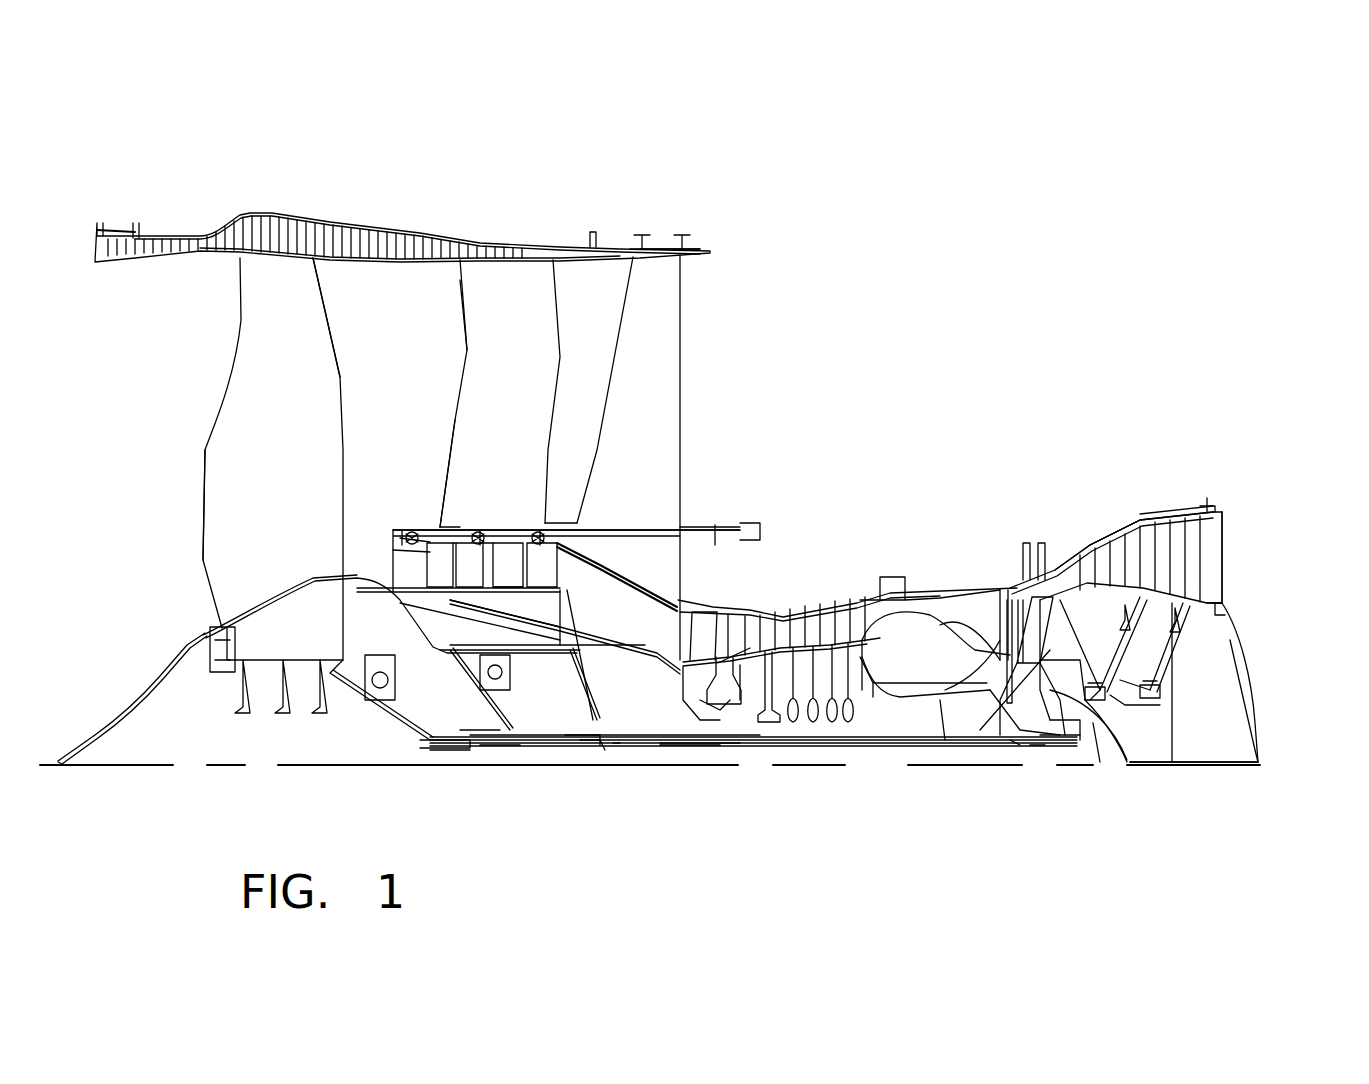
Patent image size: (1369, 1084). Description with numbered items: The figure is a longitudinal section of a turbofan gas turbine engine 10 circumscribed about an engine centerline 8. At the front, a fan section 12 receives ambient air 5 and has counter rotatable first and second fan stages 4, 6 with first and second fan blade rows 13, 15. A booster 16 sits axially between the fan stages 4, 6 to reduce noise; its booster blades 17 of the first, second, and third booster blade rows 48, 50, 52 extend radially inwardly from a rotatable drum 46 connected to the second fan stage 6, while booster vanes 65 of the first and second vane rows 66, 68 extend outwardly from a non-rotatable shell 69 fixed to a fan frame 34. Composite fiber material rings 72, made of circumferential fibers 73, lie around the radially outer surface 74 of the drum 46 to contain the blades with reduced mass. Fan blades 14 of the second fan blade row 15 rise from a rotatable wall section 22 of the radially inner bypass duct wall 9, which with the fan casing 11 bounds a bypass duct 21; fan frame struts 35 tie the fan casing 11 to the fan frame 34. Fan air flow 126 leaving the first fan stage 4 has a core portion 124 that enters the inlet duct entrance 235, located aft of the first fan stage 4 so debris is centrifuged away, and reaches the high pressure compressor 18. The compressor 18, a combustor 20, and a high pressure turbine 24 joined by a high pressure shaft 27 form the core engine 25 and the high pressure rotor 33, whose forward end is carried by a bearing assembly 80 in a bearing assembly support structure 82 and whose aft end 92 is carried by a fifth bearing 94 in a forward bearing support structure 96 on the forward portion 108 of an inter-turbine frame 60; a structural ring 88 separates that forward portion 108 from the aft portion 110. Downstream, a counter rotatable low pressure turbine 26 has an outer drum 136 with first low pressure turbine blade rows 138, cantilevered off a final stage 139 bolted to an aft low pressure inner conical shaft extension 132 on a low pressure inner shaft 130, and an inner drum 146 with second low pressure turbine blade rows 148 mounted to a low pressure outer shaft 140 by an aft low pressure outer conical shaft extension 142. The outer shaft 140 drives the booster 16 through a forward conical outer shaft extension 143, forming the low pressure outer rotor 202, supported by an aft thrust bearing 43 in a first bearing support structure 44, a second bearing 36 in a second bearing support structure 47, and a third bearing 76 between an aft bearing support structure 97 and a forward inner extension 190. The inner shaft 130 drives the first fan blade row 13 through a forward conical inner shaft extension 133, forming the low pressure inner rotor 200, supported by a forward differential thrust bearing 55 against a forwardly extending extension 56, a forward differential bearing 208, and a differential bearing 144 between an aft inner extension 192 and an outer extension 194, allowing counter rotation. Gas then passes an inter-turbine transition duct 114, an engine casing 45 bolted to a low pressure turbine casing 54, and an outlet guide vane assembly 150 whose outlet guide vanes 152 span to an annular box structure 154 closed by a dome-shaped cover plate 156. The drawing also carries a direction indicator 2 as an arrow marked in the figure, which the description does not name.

The core flow direction 2 is at (420, 480).
The first fan stage 4 is at (200, 312).
The ambient air 5 is at (75, 564).
The second fan stage 6 is at (430, 318).
The engine centerline 8 is at (318, 768).
The radially inner bypass duct wall 9 is at (470, 530).
The turbofan gas turbine engine 10 is at (785, 120).
The fan casing 11 is at (550, 240).
The fan section 12 is at (158, 156).
The first fan blade row 13 is at (185, 535).
The fan blades 14 is at (318, 360).
The second fan blade row 15 is at (462, 362).
The booster 16 is at (445, 520).
The booster blades 17 is at (393, 560).
The high pressure compressor 18 is at (725, 590).
The combustor 20 is at (925, 580).
The bypass duct 21 is at (349, 317).
The rotatable wall section 22 is at (420, 545).
The high pressure turbine 24 is at (1000, 575).
The core engine 25 is at (830, 575).
The low pressure turbine 26 is at (1152, 440).
The high pressure shaft 27 is at (930, 685).
The high pressure rotor 33 is at (870, 740).
The fan frame 34 is at (685, 570).
The fan frame struts 35 is at (628, 457).
The second bearing 36 is at (603, 750).
The aft thrust bearing 43 is at (497, 672).
The first bearing support structure 44 is at (552, 640).
The engine casing 45 is at (855, 600).
The rotatable drum 46 is at (410, 530).
The second bearing support structure 47 is at (580, 745).
The first booster blade row 48 is at (400, 545).
The second booster blade row 50 is at (485, 565).
The third booster blade row 52 is at (595, 563).
The low pressure turbine casing 54 is at (1195, 512).
The forward differential thrust bearing 55 is at (368, 700).
The forwardly extending extension 56 is at (430, 657).
The inter-turbine frame 60 is at (1020, 650).
The booster vanes 65 is at (465, 528).
The first vane row 66 is at (430, 600).
The second vane row 68 is at (505, 583).
The non-rotatable shell 69 is at (480, 605).
The composite fiber material rings 72 is at (425, 540).
The fibers 73 is at (420, 533).
The radially outer surface 74 is at (575, 525).
The third bearing 76 is at (1180, 730).
The bearing assembly 80 is at (715, 755).
The bearing assembly support structure 82 is at (700, 710).
The structural ring 88 is at (1040, 680).
The aft end 92 is at (1050, 745).
The fifth bearing 94 is at (1060, 745).
The forward bearing support structure 96 is at (1010, 740).
The aft bearing support structure 97 is at (1140, 660).
The forward portion 108 is at (1040, 705).
The aft portion 110 is at (1065, 655).
The inter-turbine transition duct 114 is at (1020, 585).
The core portion 124 is at (372, 575).
The fan air flow 126 is at (50, 500).
The low pressure inner shaft 130 is at (1020, 755).
The aft low pressure inner conical shaft extension 132 is at (1180, 648).
The forward conical inner shaft extension 133 is at (415, 715).
The outer drum 136 is at (1140, 520).
The first low pressure turbine blade rows 138 is at (1160, 552).
The final stage 139 is at (1225, 582).
The low pressure outer shaft 140 is at (1035, 745).
The aft low pressure outer conical shaft extension 142 is at (1095, 745).
The forward conical outer shaft extension 143 is at (480, 700).
The differential bearing 144 is at (1130, 690).
The inner drum 146 is at (1160, 605).
The second low pressure turbine blade rows 148 is at (1140, 530).
The outlet guide vane assembly 150 is at (1250, 602).
The outlet guide vanes 152 is at (1225, 540).
The annular box structure 154 is at (1225, 612).
The dome-shaped cover plate 156 is at (1245, 710).
The forward inner extension 190 is at (1110, 730).
The aft inner extension 192 is at (1130, 700).
The outer extension 194 is at (1140, 670).
The low pressure inner rotor 200 is at (455, 750).
The low pressure outer rotor 202 is at (505, 730).
The forward differential bearing 208 is at (465, 745).
The entrance 235 is at (400, 552).